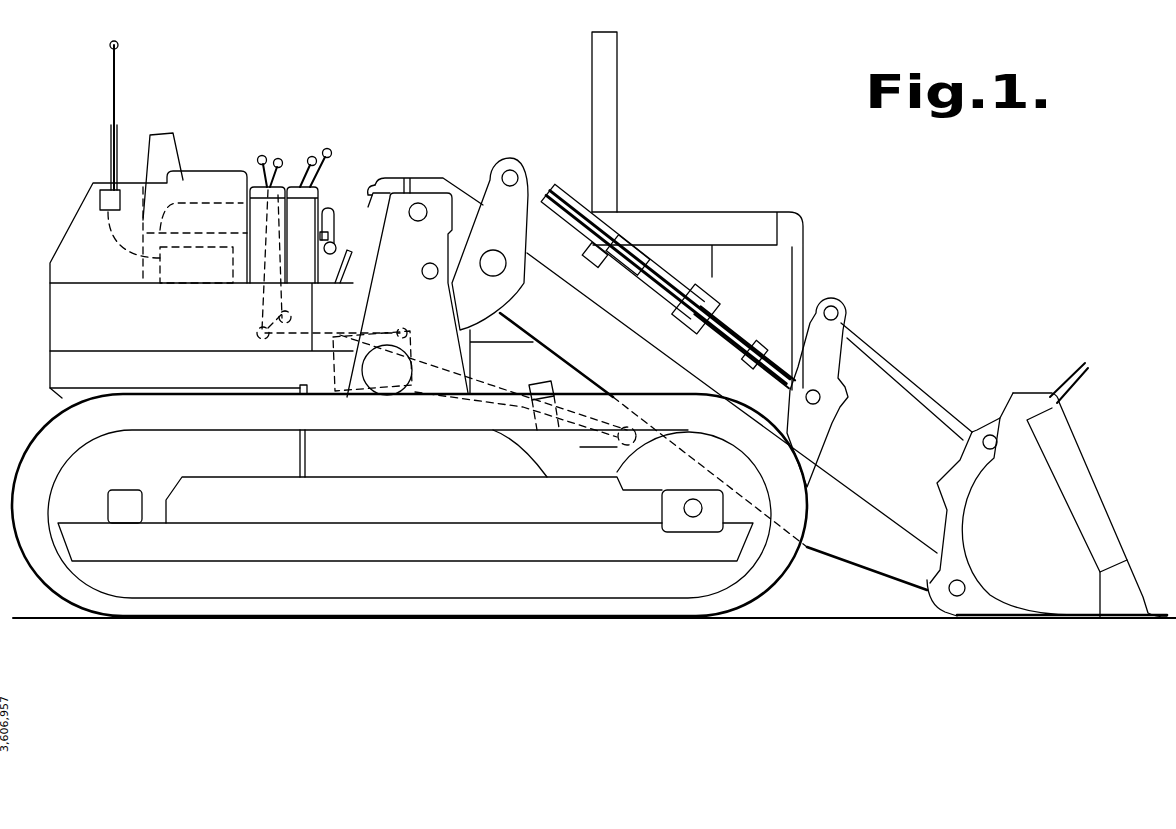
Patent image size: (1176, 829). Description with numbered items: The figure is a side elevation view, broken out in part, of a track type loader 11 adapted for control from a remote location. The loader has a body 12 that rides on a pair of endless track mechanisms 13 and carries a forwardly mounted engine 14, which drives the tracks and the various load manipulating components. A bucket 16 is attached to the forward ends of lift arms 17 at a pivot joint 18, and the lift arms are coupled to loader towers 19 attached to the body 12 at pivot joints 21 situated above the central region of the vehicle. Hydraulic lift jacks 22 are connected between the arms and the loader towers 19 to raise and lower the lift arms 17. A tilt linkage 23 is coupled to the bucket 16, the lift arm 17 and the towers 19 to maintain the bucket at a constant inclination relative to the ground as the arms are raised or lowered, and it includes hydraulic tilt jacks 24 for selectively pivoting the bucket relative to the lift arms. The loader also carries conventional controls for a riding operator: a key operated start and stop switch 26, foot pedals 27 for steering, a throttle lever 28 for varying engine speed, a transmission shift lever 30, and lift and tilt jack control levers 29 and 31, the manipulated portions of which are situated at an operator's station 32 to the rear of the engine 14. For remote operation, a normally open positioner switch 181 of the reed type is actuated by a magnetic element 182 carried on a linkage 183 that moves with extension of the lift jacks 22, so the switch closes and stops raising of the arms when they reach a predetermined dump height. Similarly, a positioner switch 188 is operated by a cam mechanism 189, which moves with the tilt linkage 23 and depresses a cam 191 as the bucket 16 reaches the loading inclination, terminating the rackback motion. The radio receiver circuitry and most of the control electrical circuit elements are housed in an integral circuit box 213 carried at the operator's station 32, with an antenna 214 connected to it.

The loader 11 is at (742, 52).
The body 12 is at (182, 386).
The endless track mechanisms 13 is at (362, 517).
The engine 14 is at (700, 275).
The bucket 16 is at (1045, 548).
The lift arms 17 is at (872, 553).
The pivot joint 18 is at (955, 597).
The loader towers 19 is at (407, 318).
The pivot joints 21 is at (420, 204).
The hydraulic lift jacks 22 is at (485, 390).
The tilt linkage 23 is at (886, 309).
The hydraulic tilt jacks 24 is at (672, 310).
The key operated start and stop switch 26 is at (373, 176).
The foot pedals 27 is at (348, 251).
The throttle lever 28 is at (314, 156).
The lift jack control lever 29 is at (279, 158).
The transmission shift lever 30 is at (331, 148).
The tilt jack control lever 31 is at (258, 157).
The operator's station 32 is at (344, 107).
The positioner switch 181 is at (293, 258).
The magnetic element 182 is at (266, 290).
The linkage 183 is at (260, 321).
The positioner switch 188 is at (593, 212).
The cam mechanism 189 is at (630, 242).
The cam 191 is at (598, 270).
The integral circuit box 213 is at (183, 267).
The antenna 214 is at (113, 60).